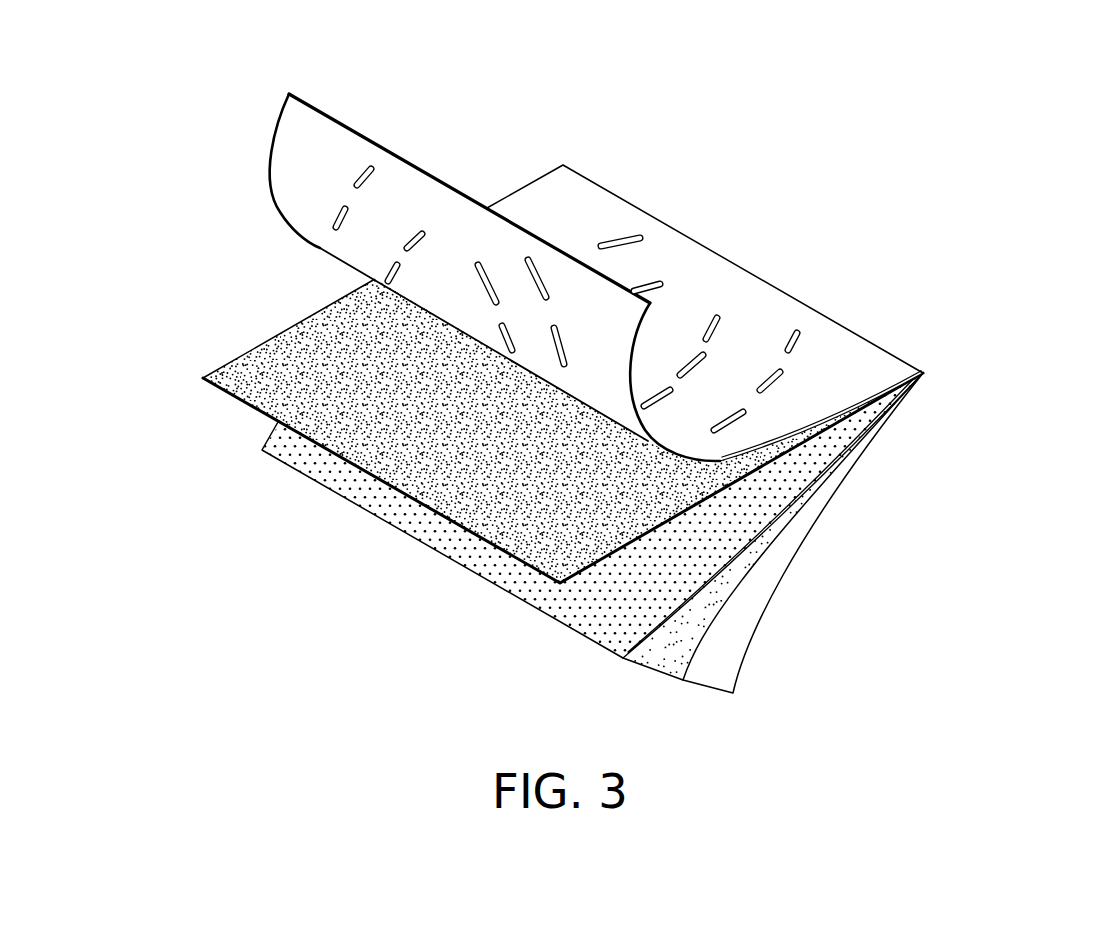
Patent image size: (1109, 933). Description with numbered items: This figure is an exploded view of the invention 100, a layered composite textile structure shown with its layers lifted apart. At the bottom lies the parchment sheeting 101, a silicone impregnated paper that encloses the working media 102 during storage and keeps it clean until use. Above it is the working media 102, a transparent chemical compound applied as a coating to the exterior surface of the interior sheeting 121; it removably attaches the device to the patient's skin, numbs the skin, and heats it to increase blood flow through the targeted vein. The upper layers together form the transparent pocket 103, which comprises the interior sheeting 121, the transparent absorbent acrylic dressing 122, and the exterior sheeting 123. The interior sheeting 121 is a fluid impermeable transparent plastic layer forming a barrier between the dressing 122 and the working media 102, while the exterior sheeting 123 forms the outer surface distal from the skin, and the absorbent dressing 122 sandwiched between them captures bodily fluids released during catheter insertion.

The invention 100 is at (820, 150).
The parchment sheeting 101 is at (760, 575).
The working media 102 is at (648, 650).
The transparent pocket 103 is at (496, 332).
The interior sheeting 121 is at (368, 505).
The transparent absorbent acrylic dressing 122 is at (325, 415).
The exterior sheeting 123 is at (317, 137).